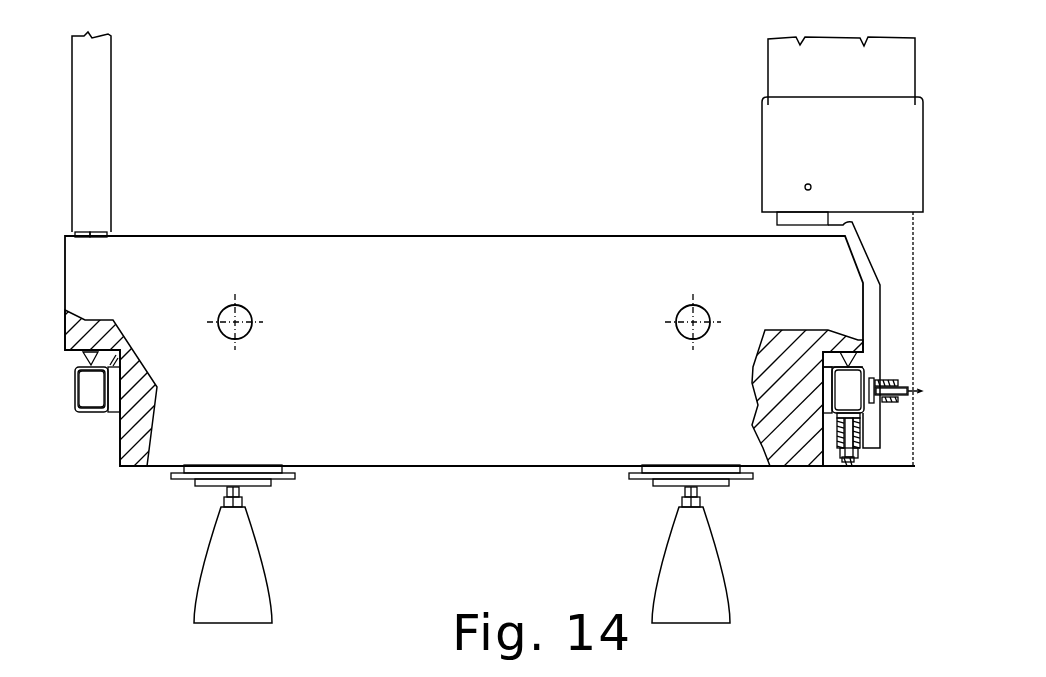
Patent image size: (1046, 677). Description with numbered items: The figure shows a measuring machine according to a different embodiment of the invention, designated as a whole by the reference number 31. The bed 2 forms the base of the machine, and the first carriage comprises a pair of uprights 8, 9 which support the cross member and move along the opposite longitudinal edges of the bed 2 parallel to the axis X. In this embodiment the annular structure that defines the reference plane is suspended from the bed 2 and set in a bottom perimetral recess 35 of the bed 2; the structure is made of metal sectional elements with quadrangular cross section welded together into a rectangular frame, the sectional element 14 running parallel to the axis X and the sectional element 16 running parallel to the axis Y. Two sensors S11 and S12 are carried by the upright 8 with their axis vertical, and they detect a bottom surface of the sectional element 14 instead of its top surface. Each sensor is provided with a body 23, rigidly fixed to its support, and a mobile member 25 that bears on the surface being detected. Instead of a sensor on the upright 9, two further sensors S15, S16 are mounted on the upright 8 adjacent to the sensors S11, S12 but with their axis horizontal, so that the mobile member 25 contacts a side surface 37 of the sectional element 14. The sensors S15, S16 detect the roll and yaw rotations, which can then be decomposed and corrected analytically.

The bed 2 is at (528, 252).
The upright 8 is at (787, 142).
The upright 9 is at (97, 132).
The sectional element 14 is at (872, 410).
The sectional element 16 is at (82, 413).
The body 23 is at (835, 446).
The mobile member 25 is at (856, 466).
The measuring machine embodiment 31 is at (282, 130).
The bottom perimetral recess 35 is at (103, 383).
The side surface 37 is at (880, 372).
The sensor S11 is at (825, 500).
The sensor S12 is at (838, 474).
The sensor S15 is at (919, 454).
The sensor S16 is at (891, 391).